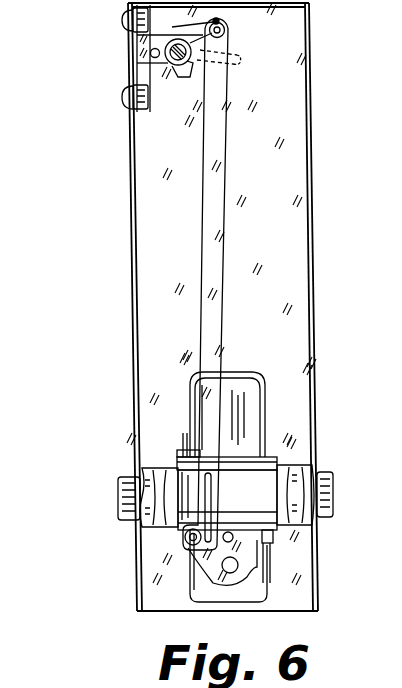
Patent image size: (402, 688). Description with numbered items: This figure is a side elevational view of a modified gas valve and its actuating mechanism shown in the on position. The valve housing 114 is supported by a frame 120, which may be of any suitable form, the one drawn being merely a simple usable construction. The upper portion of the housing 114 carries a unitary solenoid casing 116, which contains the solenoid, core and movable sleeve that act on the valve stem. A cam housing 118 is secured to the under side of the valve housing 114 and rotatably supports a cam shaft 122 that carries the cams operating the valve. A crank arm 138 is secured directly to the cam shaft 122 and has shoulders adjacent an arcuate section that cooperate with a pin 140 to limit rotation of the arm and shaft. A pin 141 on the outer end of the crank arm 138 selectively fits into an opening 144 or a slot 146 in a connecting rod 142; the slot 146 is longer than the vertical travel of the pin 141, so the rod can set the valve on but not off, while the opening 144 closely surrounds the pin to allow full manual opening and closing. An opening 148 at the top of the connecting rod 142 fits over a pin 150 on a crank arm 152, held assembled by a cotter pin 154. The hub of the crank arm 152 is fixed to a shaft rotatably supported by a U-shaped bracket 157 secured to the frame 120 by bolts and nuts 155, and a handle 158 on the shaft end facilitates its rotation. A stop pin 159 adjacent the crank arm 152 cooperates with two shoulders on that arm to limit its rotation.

The valve housing 114 is at (288, 490).
The solenoid casing 116 is at (237, 423).
The cam housing 118 is at (257, 557).
The frame 120 is at (317, 277).
The cam shaft 122 is at (238, 570).
The crank arm 138 is at (207, 565).
The pin 140 is at (278, 533).
The pin 141 is at (184, 545).
The connecting rod 142 is at (210, 338).
The opening 144 is at (186, 536).
The slot 146 is at (205, 510).
The opening 148 is at (227, 34).
The pin 150 is at (223, 22).
The crank arm 152 is at (170, 58).
The cotter pin 154 is at (228, 40).
The bolts and nuts 155 is at (122, 20).
The U-shaped bracket 157 is at (166, 50).
The handle 158 is at (240, 67).
The stop pin 159 is at (150, 51).